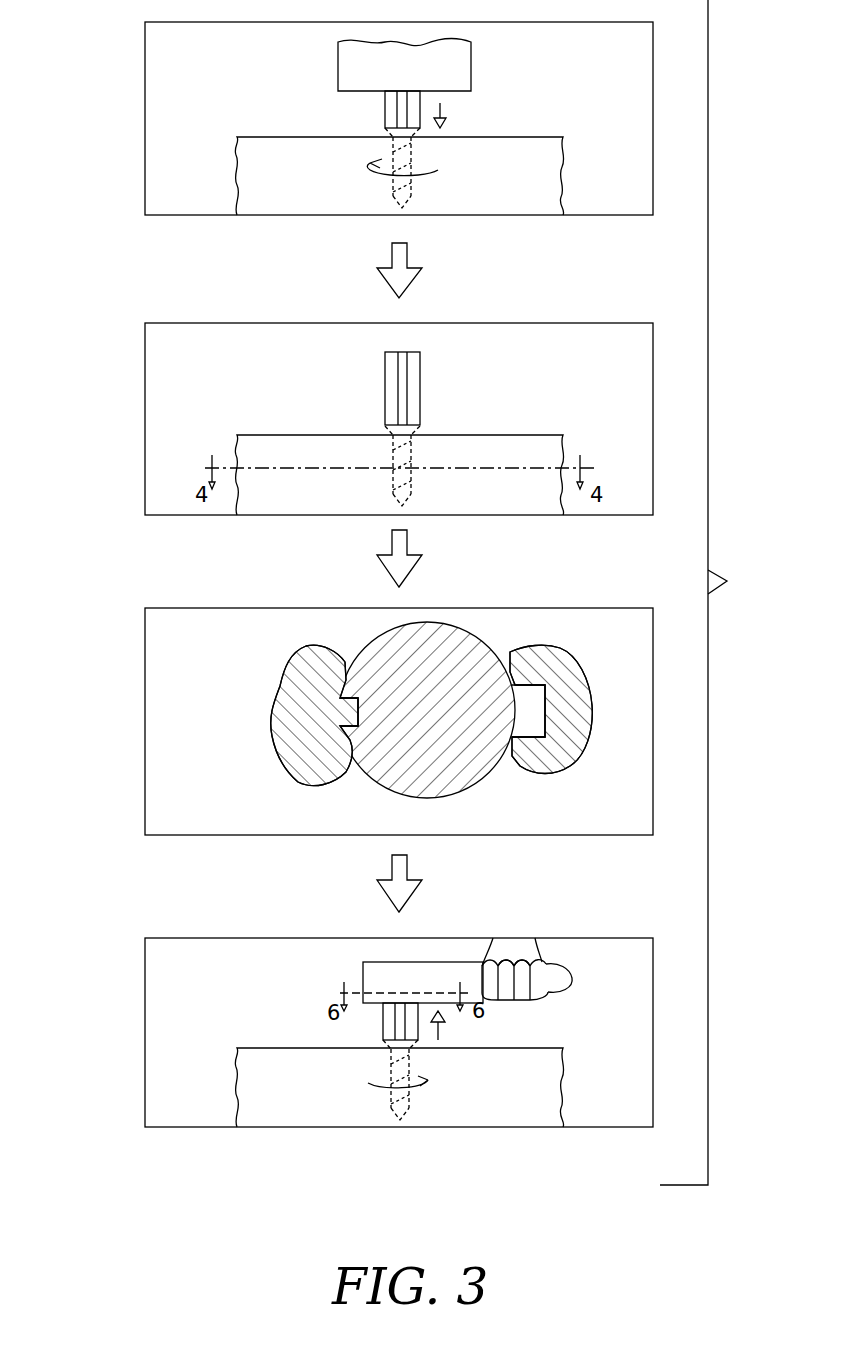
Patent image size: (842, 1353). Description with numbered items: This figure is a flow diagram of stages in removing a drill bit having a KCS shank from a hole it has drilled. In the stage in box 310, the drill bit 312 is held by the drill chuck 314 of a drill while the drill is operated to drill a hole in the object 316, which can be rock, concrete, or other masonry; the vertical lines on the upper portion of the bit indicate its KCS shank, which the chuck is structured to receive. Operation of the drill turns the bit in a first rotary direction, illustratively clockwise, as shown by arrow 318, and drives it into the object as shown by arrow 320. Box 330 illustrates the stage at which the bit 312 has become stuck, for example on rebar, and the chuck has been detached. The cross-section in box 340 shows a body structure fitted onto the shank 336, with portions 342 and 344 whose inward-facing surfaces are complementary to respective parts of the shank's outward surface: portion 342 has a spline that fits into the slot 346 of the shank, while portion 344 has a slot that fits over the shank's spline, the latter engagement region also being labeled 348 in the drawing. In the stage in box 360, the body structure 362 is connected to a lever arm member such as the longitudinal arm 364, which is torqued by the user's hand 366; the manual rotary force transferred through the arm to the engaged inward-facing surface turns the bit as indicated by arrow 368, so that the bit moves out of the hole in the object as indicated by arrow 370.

The box 310 is at (145, 128).
The drill bit 312 is at (385, 108).
The drill chuck 314 is at (471, 65).
The object 316 is at (566, 162).
The arrow 318 is at (438, 170).
The arrow 320 is at (440, 103).
The box 330 is at (145, 428).
The shank 336 is at (385, 392).
The box 340 is at (145, 733).
The portion 342 is at (288, 743).
The portion 344 is at (560, 652).
The slot 346 is at (362, 712).
The slot 348 is at (522, 706).
The box 360 is at (145, 1035).
The body structure 362 is at (363, 978).
The longitudinal arm 364 is at (572, 978).
The user's hand 366 is at (540, 945).
The arrow 368 is at (428, 1093).
The arrow 370 is at (440, 1036).